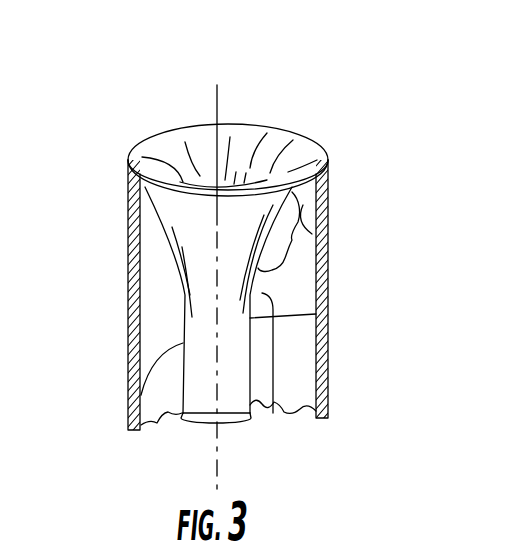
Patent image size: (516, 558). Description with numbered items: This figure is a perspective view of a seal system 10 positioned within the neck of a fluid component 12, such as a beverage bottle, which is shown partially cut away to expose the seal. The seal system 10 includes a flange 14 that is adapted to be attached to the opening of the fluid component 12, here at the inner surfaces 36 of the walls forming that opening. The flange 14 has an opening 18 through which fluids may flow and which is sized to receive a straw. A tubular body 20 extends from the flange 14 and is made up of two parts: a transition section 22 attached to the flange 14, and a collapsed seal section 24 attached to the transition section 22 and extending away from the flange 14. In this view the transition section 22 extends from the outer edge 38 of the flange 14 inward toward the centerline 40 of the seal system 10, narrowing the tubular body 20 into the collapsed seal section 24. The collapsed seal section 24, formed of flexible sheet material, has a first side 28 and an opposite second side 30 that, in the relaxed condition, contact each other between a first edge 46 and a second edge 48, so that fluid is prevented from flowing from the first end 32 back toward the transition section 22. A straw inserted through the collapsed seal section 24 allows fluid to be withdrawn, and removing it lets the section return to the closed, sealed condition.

The seal system 10 is at (372, 73).
The fluid component 12 is at (328, 383).
The flange 14 is at (326, 149).
The opening 18 is at (263, 158).
The tubular body 20 is at (102, 183).
The transition section 22 is at (284, 232).
The collapsed seal section 24 is at (273, 349).
The first side 28 is at (211, 252).
The second side 30 is at (200, 422).
The first end 32 is at (238, 422).
The inner surfaces 36 is at (314, 236).
The outer edge 38 is at (330, 161).
The centerline 40 is at (218, 92).
The first edge 46 is at (136, 388).
The second edge 48 is at (316, 314).